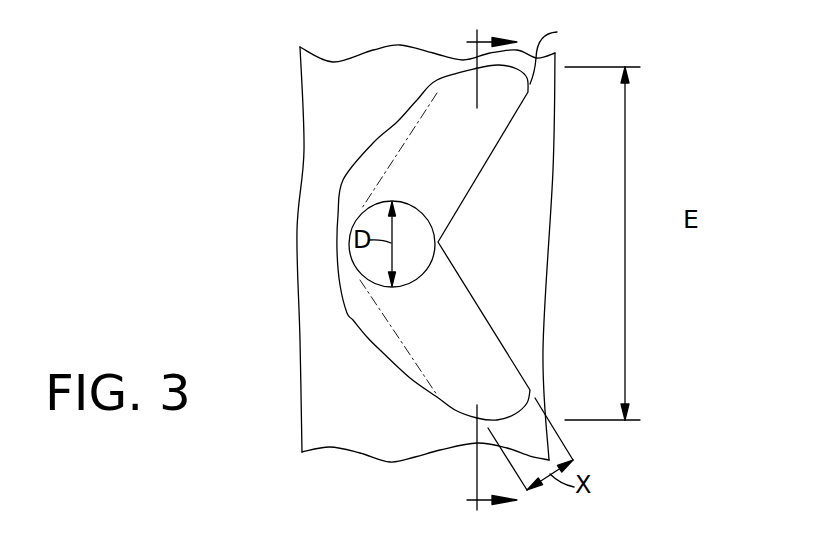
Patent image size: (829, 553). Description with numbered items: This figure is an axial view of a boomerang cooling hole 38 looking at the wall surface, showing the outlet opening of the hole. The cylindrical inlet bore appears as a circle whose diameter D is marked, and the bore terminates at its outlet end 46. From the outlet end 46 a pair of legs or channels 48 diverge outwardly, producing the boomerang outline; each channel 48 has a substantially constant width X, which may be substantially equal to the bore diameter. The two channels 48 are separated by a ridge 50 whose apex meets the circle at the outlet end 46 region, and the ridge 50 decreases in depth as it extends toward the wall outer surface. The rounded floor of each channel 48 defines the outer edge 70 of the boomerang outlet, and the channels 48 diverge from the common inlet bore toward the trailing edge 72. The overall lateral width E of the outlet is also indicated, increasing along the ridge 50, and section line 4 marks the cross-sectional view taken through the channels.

The cooling hole 38 is at (266, 92).
The outlet end 46 is at (379, 204).
The channels 48 is at (476, 135).
The ridge 50 is at (440, 242).
The outer edge 70 is at (397, 120).
The trailing edge 72 is at (560, 51).
The section line 4- 4 is at (492, 269).